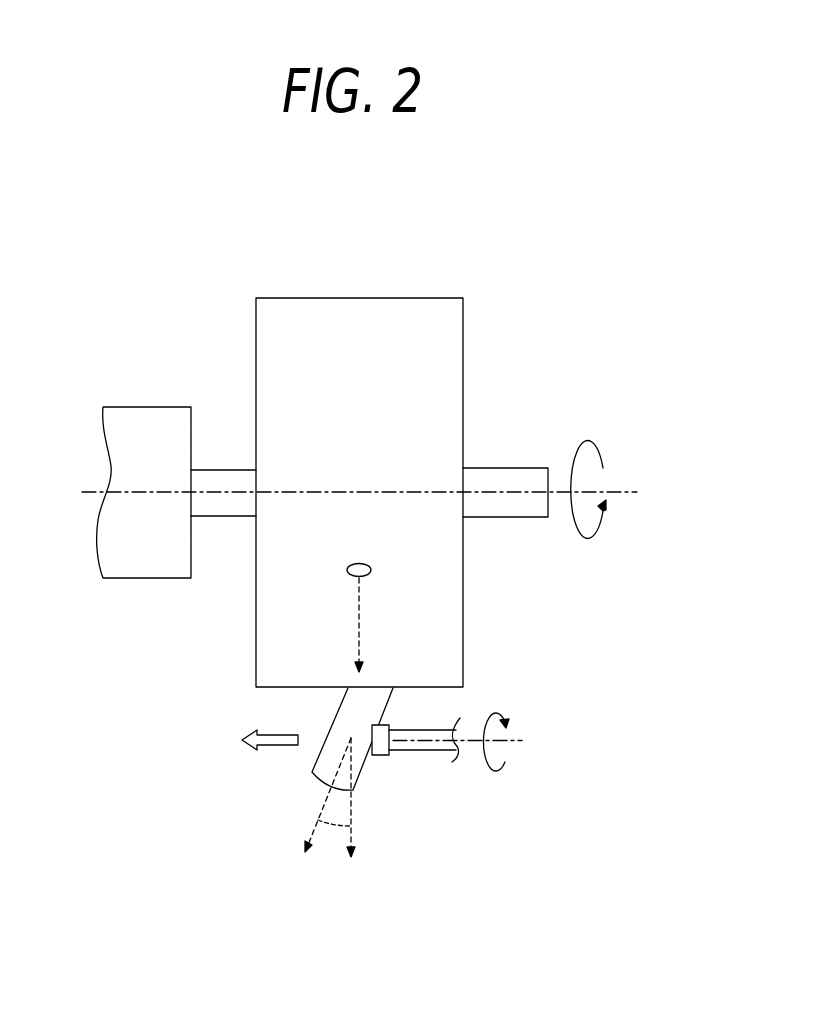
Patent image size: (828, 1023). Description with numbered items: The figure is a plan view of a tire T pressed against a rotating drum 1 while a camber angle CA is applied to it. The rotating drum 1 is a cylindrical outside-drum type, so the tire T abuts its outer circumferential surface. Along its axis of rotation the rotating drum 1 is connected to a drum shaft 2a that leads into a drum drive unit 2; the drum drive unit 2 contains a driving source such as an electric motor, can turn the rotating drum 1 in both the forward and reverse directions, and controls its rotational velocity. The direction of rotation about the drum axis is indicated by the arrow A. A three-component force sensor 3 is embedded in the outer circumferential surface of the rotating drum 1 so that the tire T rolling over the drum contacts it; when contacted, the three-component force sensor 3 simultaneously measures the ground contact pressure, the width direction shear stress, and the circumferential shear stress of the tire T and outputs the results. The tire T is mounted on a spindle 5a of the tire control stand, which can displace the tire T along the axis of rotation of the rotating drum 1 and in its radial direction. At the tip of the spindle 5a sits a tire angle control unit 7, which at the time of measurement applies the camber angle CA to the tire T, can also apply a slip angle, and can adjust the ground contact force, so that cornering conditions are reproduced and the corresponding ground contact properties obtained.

The rotating drum 1 is at (358, 298).
The drum drive unit 2 is at (141, 407).
The drum shaft 2a is at (508, 468).
The three-component force sensor 3 is at (370, 563).
The spindle 5a is at (415, 751).
The tire angle control unit 7 is at (373, 755).
The tire T is at (334, 720).
The spindle rotation direction A is at (616, 489).
The camber angle CA is at (330, 800).